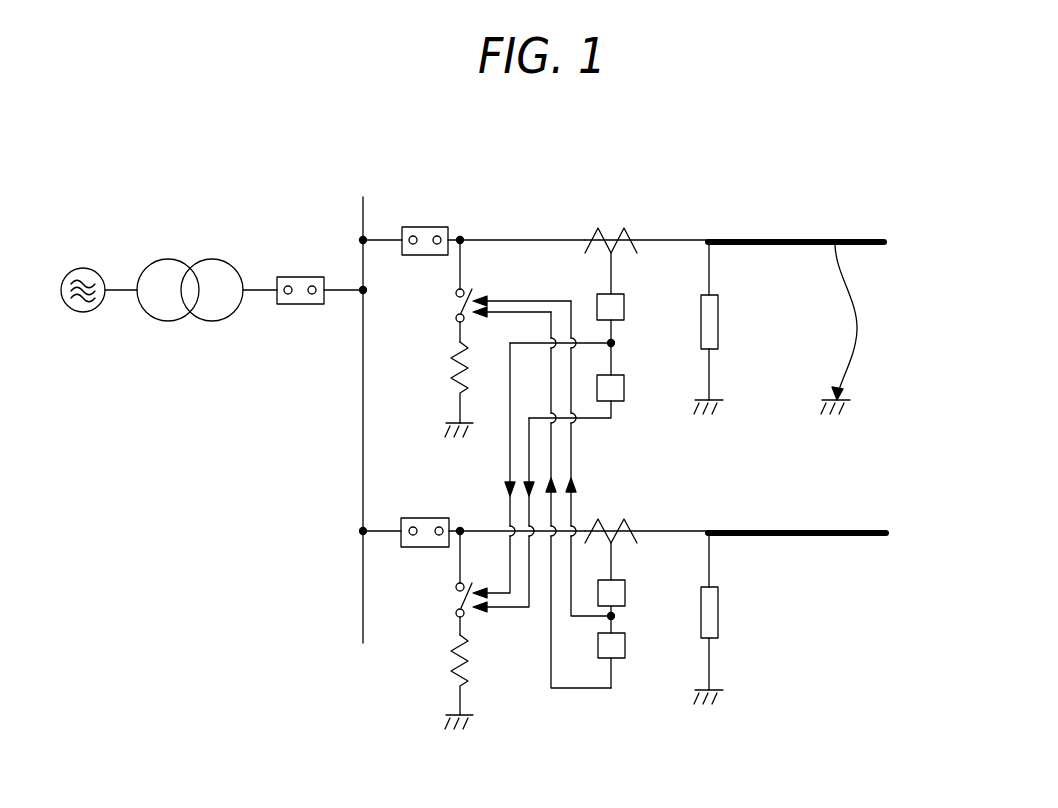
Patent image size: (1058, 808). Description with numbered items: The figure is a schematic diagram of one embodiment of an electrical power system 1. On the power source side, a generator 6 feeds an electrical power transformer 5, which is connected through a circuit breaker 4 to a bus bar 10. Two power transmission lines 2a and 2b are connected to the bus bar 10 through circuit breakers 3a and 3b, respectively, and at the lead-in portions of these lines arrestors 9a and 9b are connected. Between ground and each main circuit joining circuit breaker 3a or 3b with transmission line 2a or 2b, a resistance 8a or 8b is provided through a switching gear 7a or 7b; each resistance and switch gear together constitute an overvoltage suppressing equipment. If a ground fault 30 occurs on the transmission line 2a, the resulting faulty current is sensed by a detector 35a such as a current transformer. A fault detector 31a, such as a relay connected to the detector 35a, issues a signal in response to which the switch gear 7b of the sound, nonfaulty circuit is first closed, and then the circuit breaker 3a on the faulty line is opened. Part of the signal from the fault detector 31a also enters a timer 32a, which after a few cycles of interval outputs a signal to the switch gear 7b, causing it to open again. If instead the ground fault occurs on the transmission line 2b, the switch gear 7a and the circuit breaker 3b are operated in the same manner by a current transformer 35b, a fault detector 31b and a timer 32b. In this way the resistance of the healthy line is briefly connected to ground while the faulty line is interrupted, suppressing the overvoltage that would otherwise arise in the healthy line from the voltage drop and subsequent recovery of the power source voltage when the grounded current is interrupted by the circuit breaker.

The electrical power system 1 is at (341, 415).
The power transmission line 2a is at (773, 239).
The power transmission line 2b is at (783, 531).
The circuit breaker 3a is at (433, 227).
The circuit breaker 3b is at (433, 518).
The circuit breaker 4 is at (293, 277).
The electrical power transformer 5 is at (180, 258).
The generator 6 is at (87, 268).
The switching gear 7a is at (452, 305).
The switching gear 7b is at (452, 600).
The resistance 8a is at (450, 366).
The resistance 8b is at (450, 660).
The arrestor 9a is at (718, 318).
The arrestor 9b is at (718, 597).
The bus bar 10 is at (363, 462).
The ground fault 30 is at (857, 333).
The fault detector 31a is at (605, 293).
The fault detector 31b is at (625, 585).
The timer 32a is at (620, 402).
The timer 32b is at (625, 638).
The detector 35a is at (611, 228).
The current transformer 35b is at (611, 520).